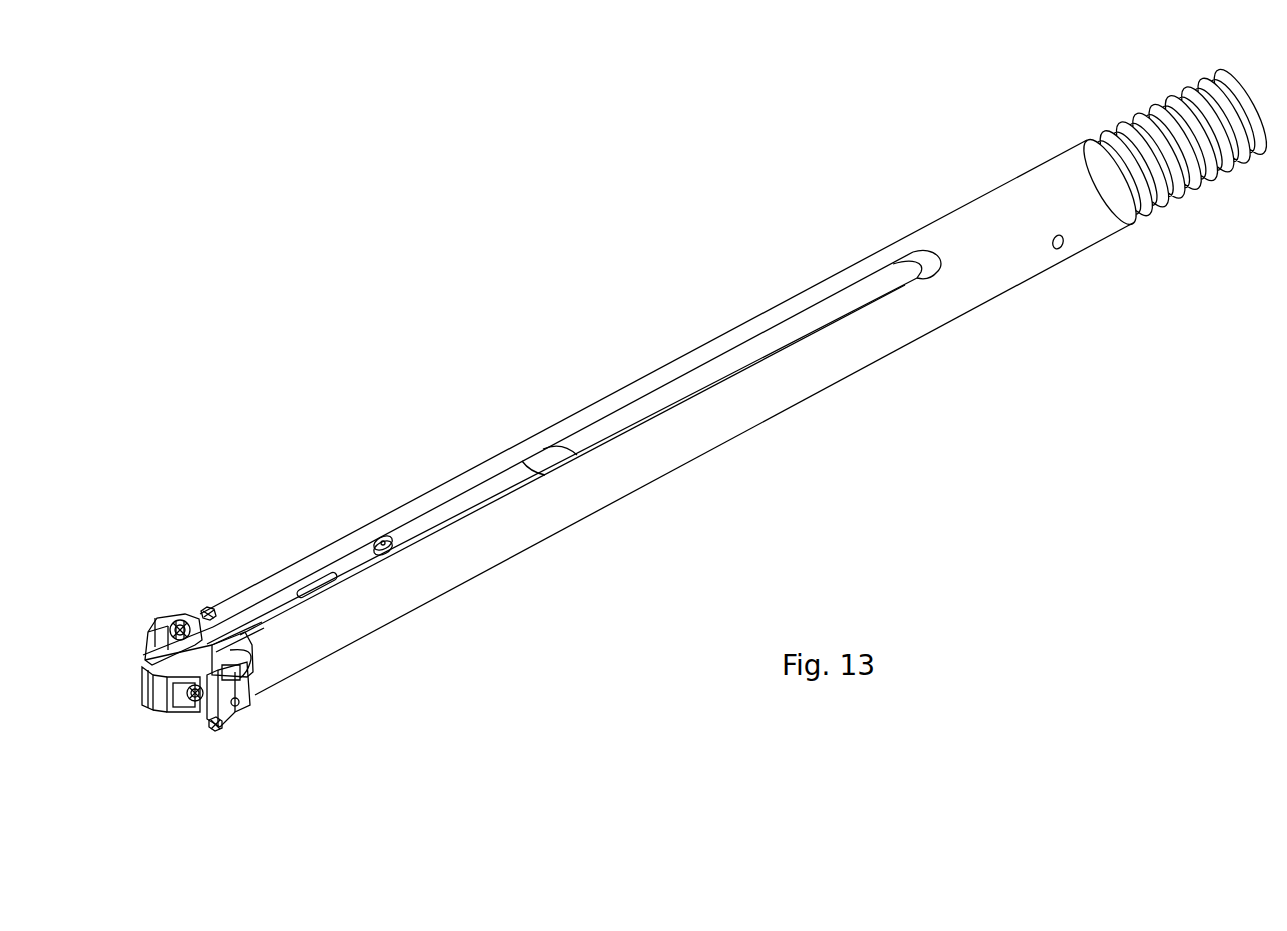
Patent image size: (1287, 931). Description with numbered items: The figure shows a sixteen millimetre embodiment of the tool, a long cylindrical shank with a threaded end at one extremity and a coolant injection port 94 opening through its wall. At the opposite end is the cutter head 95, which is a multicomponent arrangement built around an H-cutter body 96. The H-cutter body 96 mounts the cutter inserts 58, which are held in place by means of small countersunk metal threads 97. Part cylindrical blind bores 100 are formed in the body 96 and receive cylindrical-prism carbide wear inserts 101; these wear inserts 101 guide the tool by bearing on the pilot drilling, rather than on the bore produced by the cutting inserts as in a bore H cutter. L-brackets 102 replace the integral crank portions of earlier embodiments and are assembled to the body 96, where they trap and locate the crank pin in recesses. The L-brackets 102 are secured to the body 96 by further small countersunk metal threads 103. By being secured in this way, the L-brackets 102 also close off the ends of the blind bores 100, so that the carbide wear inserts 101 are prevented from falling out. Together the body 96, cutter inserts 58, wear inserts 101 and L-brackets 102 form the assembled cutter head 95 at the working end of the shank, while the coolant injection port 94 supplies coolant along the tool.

The coolant injection port 94 is at (1064, 244).
The CSK metal threads 97 is at (163, 615).
The cutter inserts 58 is at (180, 612).
The L-brackets 102 is at (147, 688).
The CSK metal threads 103 is at (193, 714).
The cutter head 95 is at (263, 720).
The H-cutter body 96 is at (247, 683).
The part cylindrical blind bores 100 is at (247, 670).
The carbide wear inserts 101 is at (253, 677).